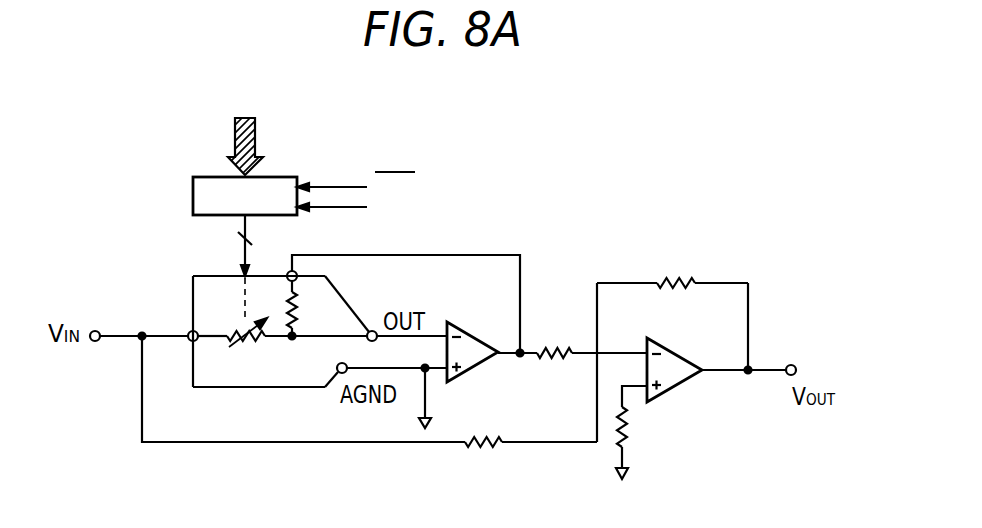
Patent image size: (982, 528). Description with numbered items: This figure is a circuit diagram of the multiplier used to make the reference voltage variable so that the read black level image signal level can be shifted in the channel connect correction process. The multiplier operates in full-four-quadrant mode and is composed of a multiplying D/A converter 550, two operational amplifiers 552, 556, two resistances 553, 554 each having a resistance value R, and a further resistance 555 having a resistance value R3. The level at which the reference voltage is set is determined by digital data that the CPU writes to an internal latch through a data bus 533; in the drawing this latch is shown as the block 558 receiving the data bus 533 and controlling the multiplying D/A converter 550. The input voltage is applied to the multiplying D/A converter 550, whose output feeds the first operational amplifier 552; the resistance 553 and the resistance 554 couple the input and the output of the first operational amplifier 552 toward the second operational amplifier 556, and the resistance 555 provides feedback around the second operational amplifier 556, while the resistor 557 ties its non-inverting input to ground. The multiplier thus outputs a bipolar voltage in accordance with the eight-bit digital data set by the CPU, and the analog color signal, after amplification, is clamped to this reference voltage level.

The data bus 533 is at (250, 122).
The latch 558 is at (266, 224).
The multiplying D/A converter 550 is at (282, 348).
The operational amplifier 552 is at (472, 330).
The resistance 553 is at (369, 419).
The resistance 554 is at (552, 378).
The resistance 555 is at (672, 307).
The operational amplifier 556 is at (684, 359).
The resistor 557 is at (655, 432).